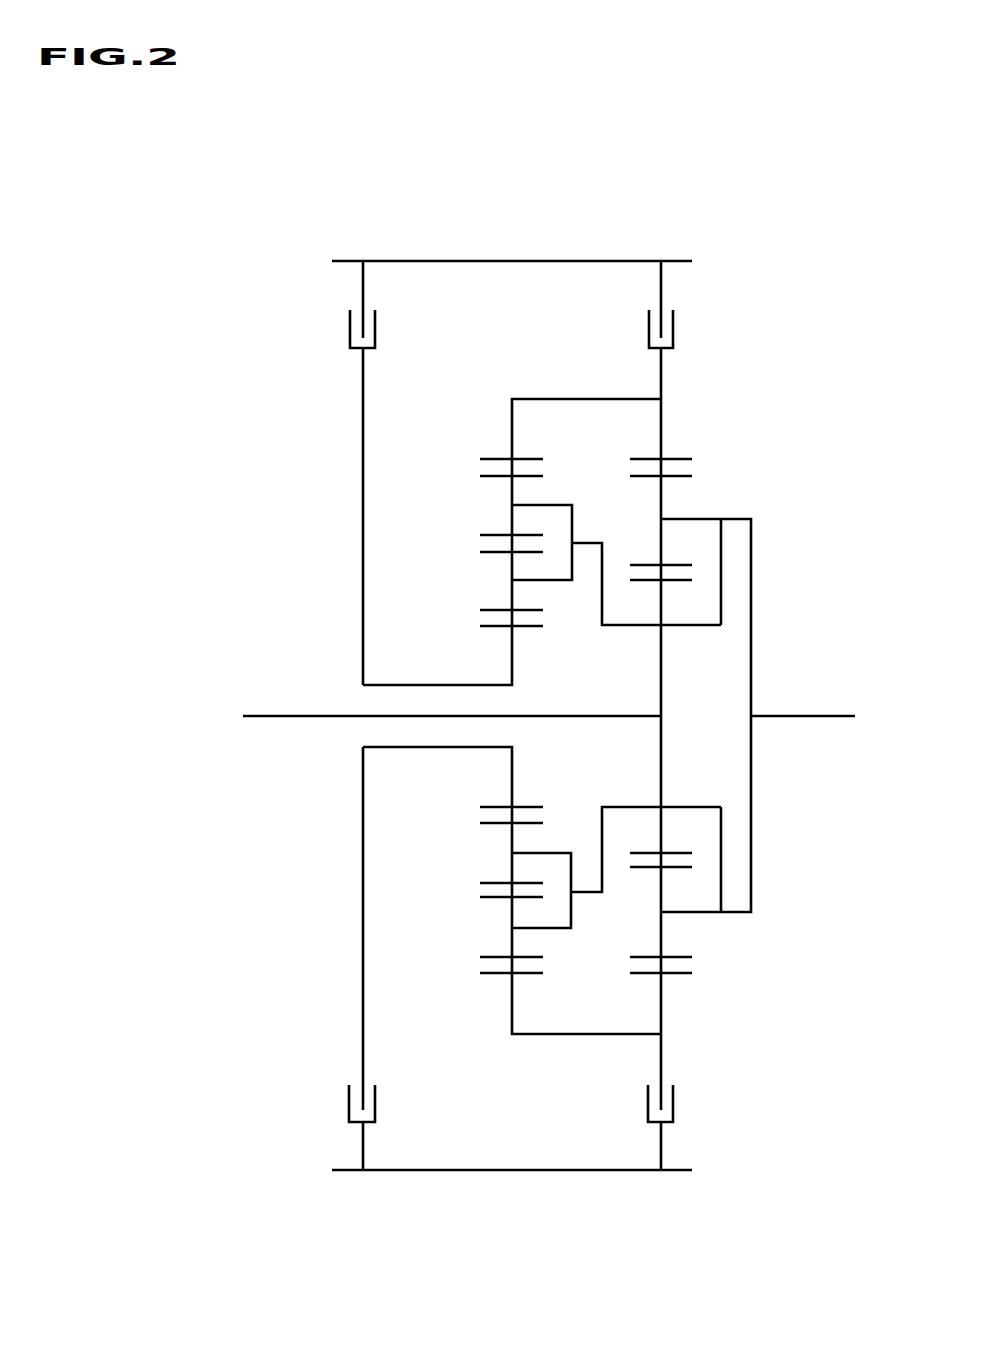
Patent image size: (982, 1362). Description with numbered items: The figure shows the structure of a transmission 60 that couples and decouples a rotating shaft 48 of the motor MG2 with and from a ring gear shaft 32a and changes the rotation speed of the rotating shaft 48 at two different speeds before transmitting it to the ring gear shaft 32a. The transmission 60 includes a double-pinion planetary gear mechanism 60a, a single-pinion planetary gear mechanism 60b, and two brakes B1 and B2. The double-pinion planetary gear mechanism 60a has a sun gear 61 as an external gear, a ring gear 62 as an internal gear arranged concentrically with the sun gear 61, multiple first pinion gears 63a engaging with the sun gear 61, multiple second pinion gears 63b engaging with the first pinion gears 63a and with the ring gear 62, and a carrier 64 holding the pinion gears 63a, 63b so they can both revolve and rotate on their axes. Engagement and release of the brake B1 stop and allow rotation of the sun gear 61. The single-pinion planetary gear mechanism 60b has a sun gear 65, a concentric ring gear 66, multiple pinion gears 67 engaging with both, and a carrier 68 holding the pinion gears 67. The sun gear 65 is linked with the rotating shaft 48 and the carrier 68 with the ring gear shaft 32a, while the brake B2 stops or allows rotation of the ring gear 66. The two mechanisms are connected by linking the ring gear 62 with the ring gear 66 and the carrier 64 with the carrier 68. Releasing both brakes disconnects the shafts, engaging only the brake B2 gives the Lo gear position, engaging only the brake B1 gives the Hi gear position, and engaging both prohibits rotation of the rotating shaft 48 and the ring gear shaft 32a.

The transmission 60 is at (590, 220).
The double-pinion planetary gear mechanism 60a is at (492, 383).
The single-pinion planetary gear mechanism 60b is at (788, 428).
The brake B1 is at (350, 320).
The brake B2 is at (673, 320).
The sun gear 61 is at (510, 658).
The ring gear 62 is at (510, 432).
The first pinion gears 63a is at (510, 565).
The second pinion gears 63b is at (510, 492).
The carrier 64 is at (543, 505).
The sun gear 65 is at (661, 670).
The ring gear 66 is at (661, 425).
The pinion gears 67 is at (661, 496).
The carrier 68 is at (751, 560).
The rotating shaft 48 is at (307, 716).
The ring gear shaft 32a is at (794, 716).